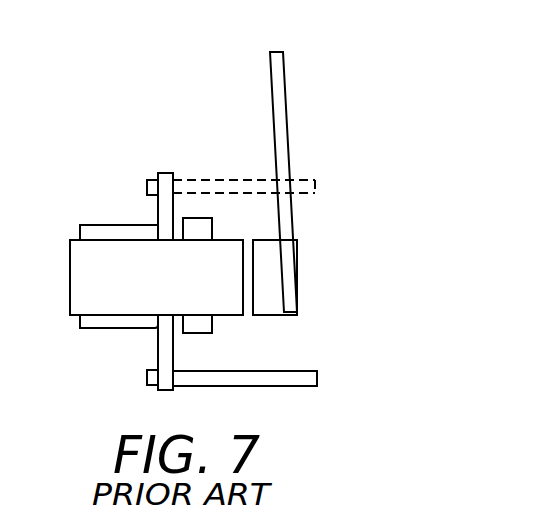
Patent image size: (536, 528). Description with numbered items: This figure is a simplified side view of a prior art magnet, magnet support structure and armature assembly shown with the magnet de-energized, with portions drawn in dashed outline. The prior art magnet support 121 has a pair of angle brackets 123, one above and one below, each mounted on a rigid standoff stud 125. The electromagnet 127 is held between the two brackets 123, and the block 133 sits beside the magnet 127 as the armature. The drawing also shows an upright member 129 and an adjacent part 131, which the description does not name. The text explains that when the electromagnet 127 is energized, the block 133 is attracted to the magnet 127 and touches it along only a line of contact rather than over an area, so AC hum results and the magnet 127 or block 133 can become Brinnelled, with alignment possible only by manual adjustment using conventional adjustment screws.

The prior art magnet support 121 is at (178, 107).
The angle brackets 123 is at (91, 225).
The rigid standoff stud 125 is at (183, 180).
The electromagnet 127 is at (70, 240).
The circuit board 129 is at (312, 95).
The mounting tab 131 is at (243, 316).
The block 133 is at (273, 268).